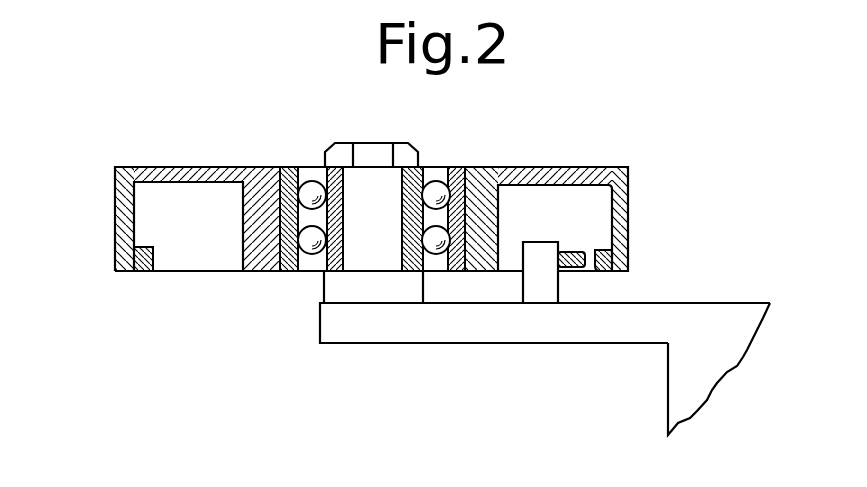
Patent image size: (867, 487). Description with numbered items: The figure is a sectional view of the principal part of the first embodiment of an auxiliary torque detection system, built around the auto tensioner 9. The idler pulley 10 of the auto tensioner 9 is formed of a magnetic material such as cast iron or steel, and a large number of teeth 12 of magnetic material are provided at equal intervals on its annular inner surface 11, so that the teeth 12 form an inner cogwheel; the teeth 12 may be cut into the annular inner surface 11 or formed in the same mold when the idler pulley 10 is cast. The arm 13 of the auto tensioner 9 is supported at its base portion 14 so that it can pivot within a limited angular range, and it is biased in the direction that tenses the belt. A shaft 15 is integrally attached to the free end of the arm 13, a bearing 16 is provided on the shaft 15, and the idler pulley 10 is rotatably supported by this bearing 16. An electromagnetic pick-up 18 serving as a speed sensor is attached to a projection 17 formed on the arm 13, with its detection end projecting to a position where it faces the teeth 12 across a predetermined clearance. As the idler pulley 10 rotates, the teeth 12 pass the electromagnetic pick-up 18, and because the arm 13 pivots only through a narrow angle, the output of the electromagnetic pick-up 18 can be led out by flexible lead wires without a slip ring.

The auto tensioner 9 is at (652, 252).
The idler pulley 10 is at (200, 172).
The annular inner surface 11 is at (135, 221).
The teeth 12 is at (143, 263).
The arm 13 is at (408, 328).
The base portion 14 is at (680, 382).
The shaft 15 is at (367, 260).
The bearing 16 is at (313, 188).
The projection 17 is at (537, 248).
The electromagnetic pick-up 18 is at (570, 248).